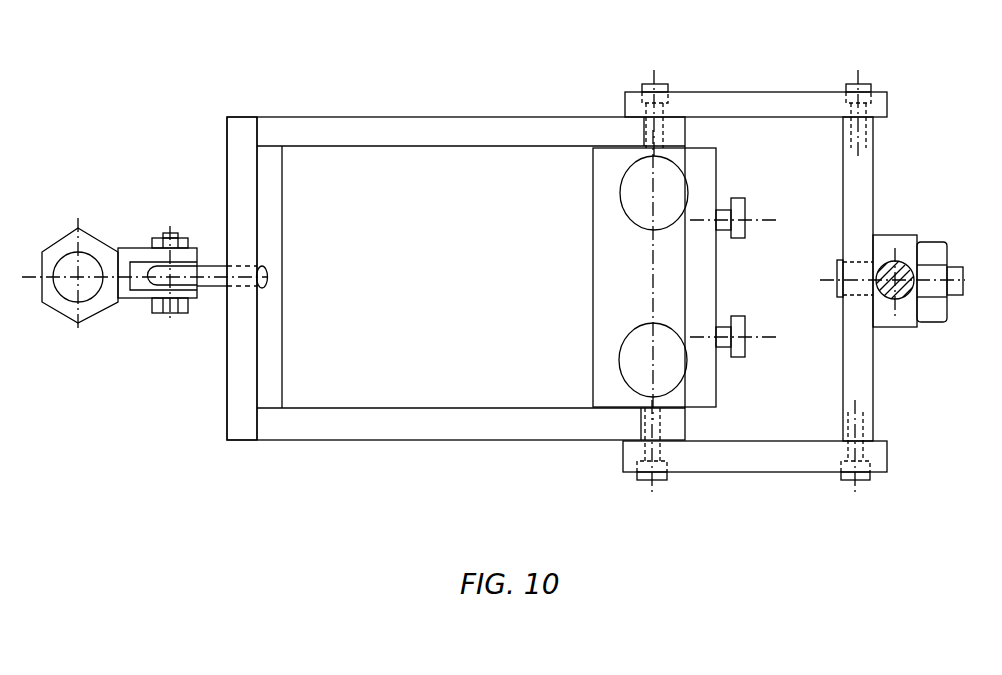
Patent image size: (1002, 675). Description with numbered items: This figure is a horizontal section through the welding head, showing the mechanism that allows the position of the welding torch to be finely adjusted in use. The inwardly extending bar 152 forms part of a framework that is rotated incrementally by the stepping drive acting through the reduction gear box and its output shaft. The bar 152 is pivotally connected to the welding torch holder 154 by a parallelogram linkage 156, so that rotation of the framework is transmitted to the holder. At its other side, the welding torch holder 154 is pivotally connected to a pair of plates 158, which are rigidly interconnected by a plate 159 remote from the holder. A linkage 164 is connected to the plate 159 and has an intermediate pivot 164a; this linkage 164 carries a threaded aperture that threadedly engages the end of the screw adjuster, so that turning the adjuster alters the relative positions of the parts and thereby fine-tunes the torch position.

The inwardly extending bar 152 is at (898, 288).
The welding torch holder 154 is at (615, 305).
The parallelogram linkage 156 is at (745, 102).
The plates 158 is at (422, 427).
The plate 159 is at (227, 410).
The linkage 164 is at (133, 297).
The intermediate pivot 164a is at (177, 278).